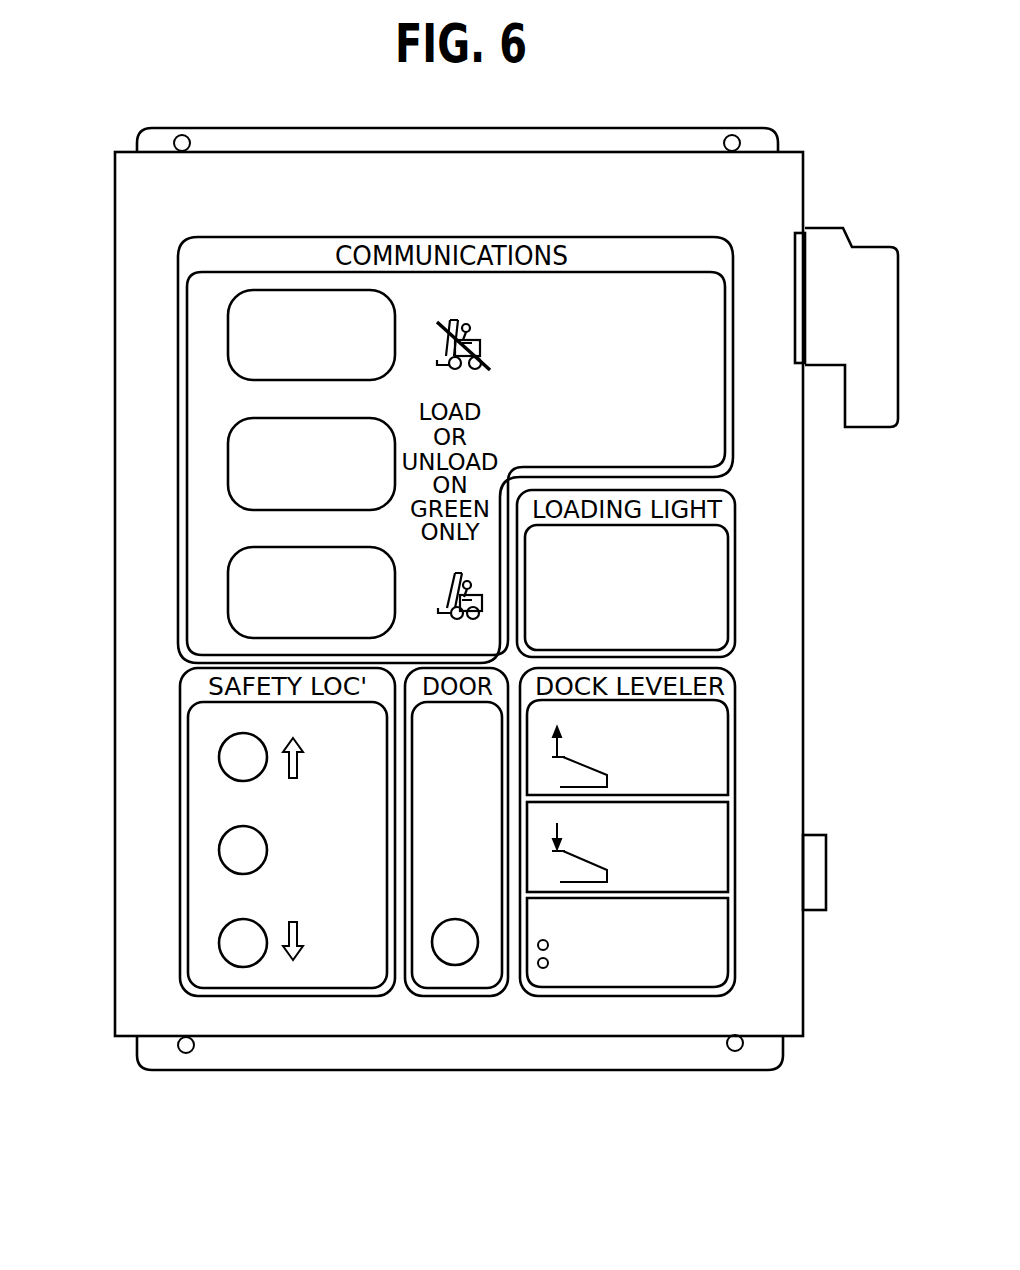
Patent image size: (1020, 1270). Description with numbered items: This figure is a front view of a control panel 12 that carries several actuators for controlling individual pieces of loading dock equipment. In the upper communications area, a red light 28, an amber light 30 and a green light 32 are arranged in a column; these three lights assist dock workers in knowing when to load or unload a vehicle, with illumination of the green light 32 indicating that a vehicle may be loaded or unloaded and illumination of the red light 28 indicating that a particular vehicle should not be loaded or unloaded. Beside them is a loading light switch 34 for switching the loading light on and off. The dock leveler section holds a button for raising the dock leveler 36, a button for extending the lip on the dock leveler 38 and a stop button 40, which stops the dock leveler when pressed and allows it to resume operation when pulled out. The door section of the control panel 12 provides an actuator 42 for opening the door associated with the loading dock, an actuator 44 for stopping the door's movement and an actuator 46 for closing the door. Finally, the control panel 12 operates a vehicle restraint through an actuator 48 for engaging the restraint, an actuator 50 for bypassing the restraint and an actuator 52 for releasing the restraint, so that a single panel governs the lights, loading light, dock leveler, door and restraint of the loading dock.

The control panel 12 is at (572, 127).
The red light 28 is at (218, 327).
The amber light 30 is at (218, 460).
The green light 32 is at (218, 582).
The loading light switch 34 is at (680, 597).
The button for raising the dock leveler 36 is at (682, 743).
The button for extending the lip on the dock leveler 38 is at (682, 833).
The stop button 40 is at (682, 938).
The actuator for opening the door 42 is at (433, 757).
The actuator for stopping the door's movement 44 is at (433, 852).
The actuator for closing the door 46 is at (432, 958).
The actuator for engaging the restraint 48 is at (218, 757).
The actuator for bypassing the restraint 50 is at (218, 850).
The actuator for releasing the restraint 52 is at (218, 943).